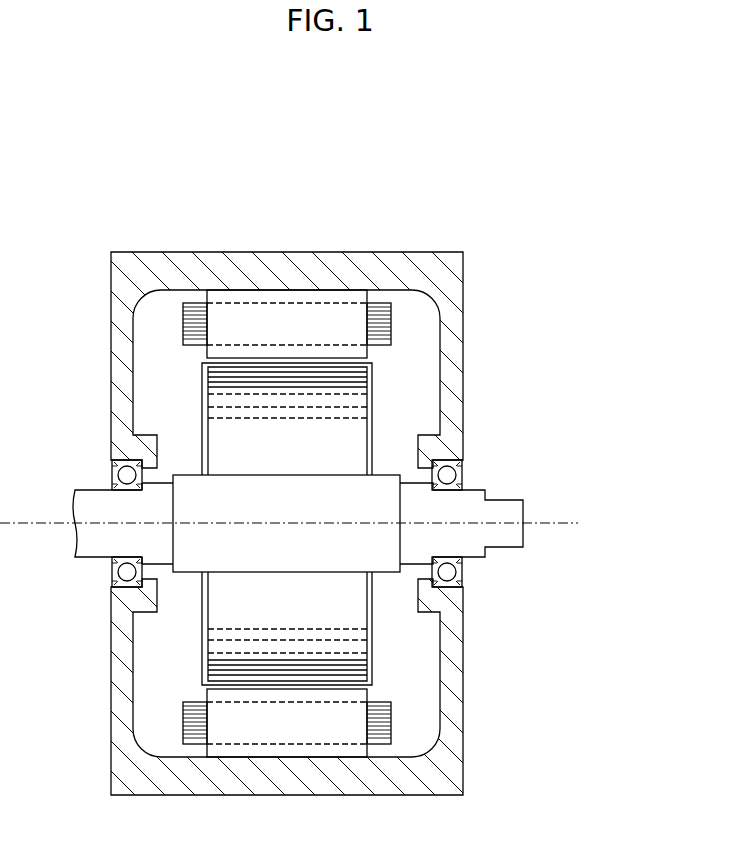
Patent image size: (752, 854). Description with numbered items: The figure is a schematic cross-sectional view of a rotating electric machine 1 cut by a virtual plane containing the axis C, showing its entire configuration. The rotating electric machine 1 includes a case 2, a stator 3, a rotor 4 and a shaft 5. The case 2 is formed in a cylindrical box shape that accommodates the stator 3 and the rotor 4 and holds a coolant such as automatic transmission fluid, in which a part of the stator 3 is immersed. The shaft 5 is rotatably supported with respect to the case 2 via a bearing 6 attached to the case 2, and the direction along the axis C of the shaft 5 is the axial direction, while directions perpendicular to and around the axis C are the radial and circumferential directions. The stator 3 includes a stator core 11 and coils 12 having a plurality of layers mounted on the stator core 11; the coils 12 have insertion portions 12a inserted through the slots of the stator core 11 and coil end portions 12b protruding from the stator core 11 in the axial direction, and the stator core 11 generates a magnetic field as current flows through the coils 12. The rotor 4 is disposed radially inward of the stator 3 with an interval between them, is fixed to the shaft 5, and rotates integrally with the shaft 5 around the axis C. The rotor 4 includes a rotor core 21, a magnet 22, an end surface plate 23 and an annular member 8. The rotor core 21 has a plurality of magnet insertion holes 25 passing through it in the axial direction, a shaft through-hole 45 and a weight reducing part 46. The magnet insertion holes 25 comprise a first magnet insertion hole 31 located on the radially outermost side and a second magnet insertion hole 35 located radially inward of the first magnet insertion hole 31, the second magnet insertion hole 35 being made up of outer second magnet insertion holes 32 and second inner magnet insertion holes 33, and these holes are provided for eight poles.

The rotating electric machine 1 is at (533, 117).
The case 2 is at (417, 248).
The stator 3 is at (249, 439).
The rotor 4 is at (358, 480).
The shaft 5 is at (515, 535).
The bearing 6 is at (448, 573).
The annular member 8 is at (323, 360).
The stator core 11 is at (308, 297).
The coils 12 is at (198, 296).
The insertion portions 12a is at (262, 315).
The coil end portions 12b is at (183, 325).
The rotor core 21 is at (353, 448).
The magnet 22 is at (337, 362).
The end surface plate 23 is at (368, 657).
The magnet insertion holes 25 is at (440, 332).
The first magnet insertion hole 31 is at (355, 358).
The outer second magnet insertion holes 32 is at (375, 362).
The second inner magnet insertion holes 33 is at (375, 385).
The second magnet insertion hole 35 is at (413, 349).
The shaft through-hole 45 is at (197, 490).
The weight reducing part 46 is at (375, 410).
The axis C is at (556, 520).